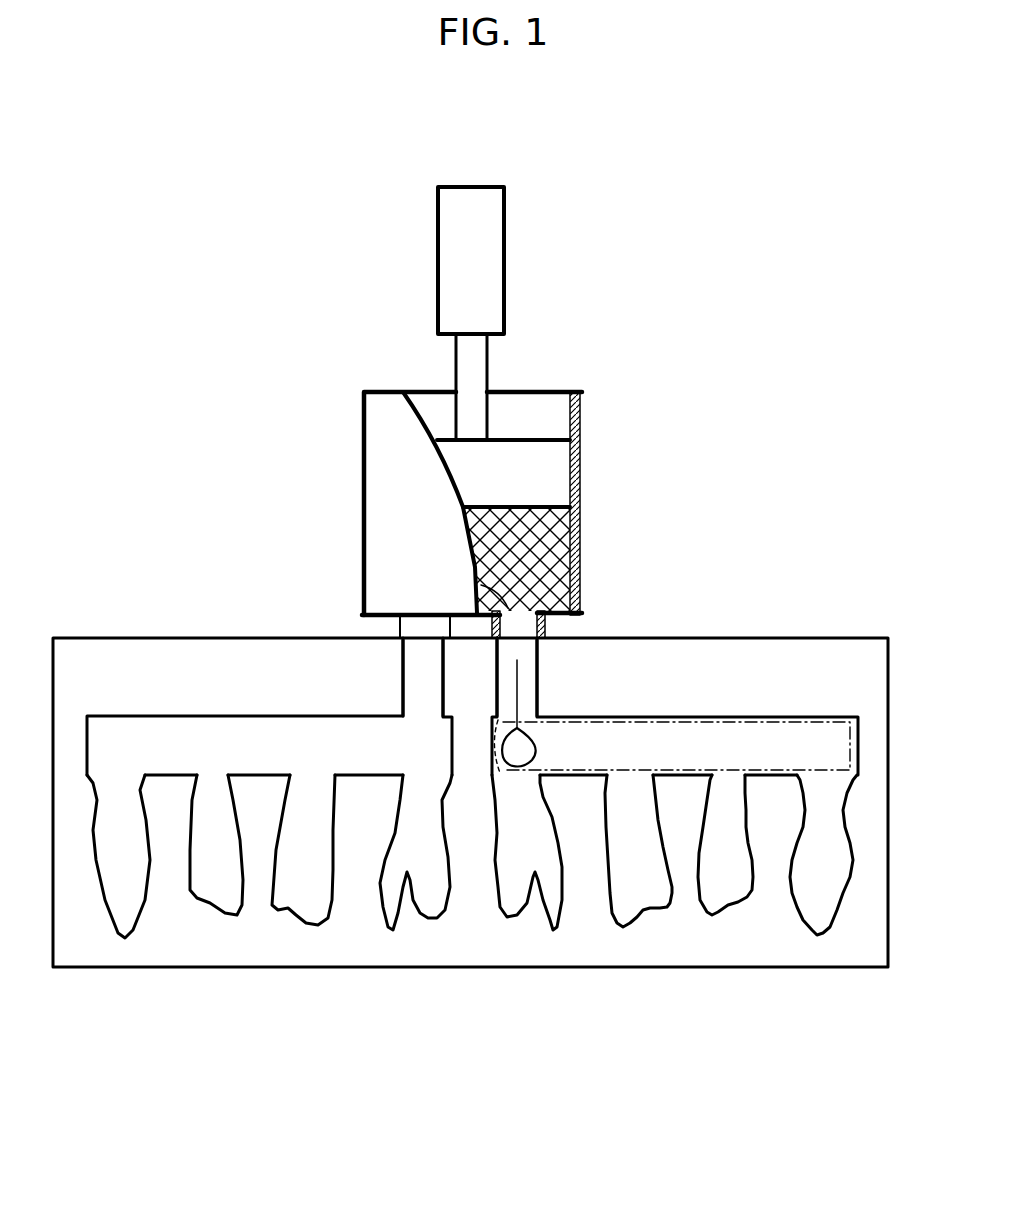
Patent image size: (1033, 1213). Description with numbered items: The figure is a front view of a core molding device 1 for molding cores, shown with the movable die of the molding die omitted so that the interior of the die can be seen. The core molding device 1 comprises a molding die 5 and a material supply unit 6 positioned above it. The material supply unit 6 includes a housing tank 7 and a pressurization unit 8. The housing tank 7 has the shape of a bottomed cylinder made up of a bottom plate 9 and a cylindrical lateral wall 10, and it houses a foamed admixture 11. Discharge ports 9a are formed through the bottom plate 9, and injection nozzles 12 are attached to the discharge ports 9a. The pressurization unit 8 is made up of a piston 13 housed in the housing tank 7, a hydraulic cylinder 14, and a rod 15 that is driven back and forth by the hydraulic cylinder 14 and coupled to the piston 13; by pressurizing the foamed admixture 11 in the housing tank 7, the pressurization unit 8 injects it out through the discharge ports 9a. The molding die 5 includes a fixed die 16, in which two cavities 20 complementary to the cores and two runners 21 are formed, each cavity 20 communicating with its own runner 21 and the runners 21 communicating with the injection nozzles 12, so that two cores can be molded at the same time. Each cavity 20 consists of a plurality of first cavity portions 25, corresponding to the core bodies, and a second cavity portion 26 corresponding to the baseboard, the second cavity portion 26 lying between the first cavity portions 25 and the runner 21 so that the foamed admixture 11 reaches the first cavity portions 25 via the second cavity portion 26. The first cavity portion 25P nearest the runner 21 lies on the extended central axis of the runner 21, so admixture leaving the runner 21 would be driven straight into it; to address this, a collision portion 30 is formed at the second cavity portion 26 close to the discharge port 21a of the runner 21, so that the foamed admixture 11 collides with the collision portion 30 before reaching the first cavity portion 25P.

The core molding device 1 is at (848, 265).
The molding die 5 is at (796, 499).
The material supply unit 6 is at (746, 320).
The housing tank 7 is at (677, 493).
The pressurization unit 8 is at (645, 280).
The bottom plate 9 is at (581, 590).
The discharge port 9a is at (480, 583).
The cylindrical lateral wall 10 is at (581, 512).
The foamed admixture 11 is at (473, 552).
The injection nozzle 12 is at (413, 628).
The piston 13 is at (542, 450).
The hydraulic cylinder 14 is at (485, 280).
The rod 15 is at (473, 370).
The fixed die 16 is at (815, 650).
The cavity 20 is at (118, 707).
The runner 21 is at (413, 667).
The discharge port of the runner 21a is at (546, 700).
The first cavity portion 25 is at (627, 910).
The first cavity portion closest to the runner 25P is at (517, 900).
The second cavity portion 26 is at (717, 722).
The collision portion 30 is at (520, 760).